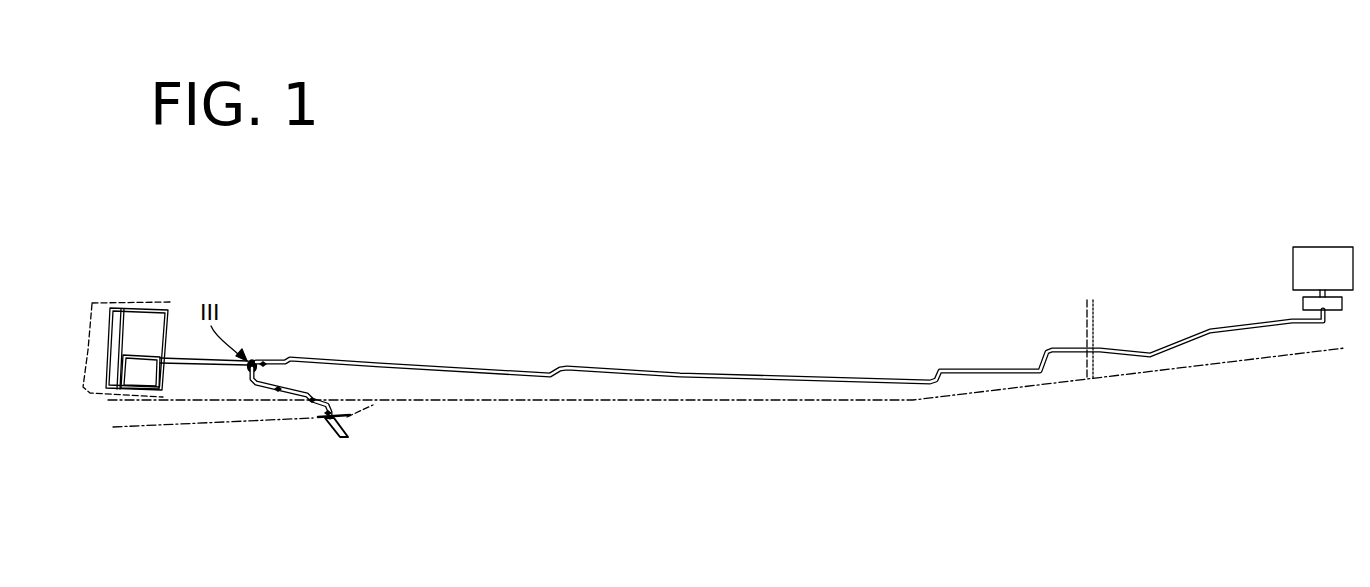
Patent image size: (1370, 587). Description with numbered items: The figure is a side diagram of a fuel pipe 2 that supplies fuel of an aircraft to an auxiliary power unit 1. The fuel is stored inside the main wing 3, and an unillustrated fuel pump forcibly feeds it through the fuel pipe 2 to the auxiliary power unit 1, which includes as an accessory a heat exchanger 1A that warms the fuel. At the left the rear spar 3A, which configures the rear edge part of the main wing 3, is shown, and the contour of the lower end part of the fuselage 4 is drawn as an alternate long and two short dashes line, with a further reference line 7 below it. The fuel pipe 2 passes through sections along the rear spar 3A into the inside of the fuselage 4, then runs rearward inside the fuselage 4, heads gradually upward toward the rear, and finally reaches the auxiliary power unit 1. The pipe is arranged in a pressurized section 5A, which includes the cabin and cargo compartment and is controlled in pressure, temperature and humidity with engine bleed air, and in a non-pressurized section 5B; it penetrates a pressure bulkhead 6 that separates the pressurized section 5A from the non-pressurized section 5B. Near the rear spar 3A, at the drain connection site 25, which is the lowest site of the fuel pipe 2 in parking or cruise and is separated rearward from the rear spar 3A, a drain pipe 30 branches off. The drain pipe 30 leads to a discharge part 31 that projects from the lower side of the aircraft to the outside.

The auxiliary power unit 1 is at (1291, 253).
The heat exchanger 1A is at (1302, 303).
The fuel pipe 2 is at (630, 370).
The main wing 3 is at (104, 302).
The rear spar 3A is at (168, 331).
The fuselage 4 is at (762, 402).
The pressurized section 5A is at (754, 290).
The non-pressurized section 5B is at (1147, 336).
The pressure bulkhead 6 is at (1093, 300).
The fairing line 7 is at (178, 427).
The drain connection site 25 is at (252, 359).
The drain pipe 30 is at (292, 384).
The discharge part 31 is at (324, 420).